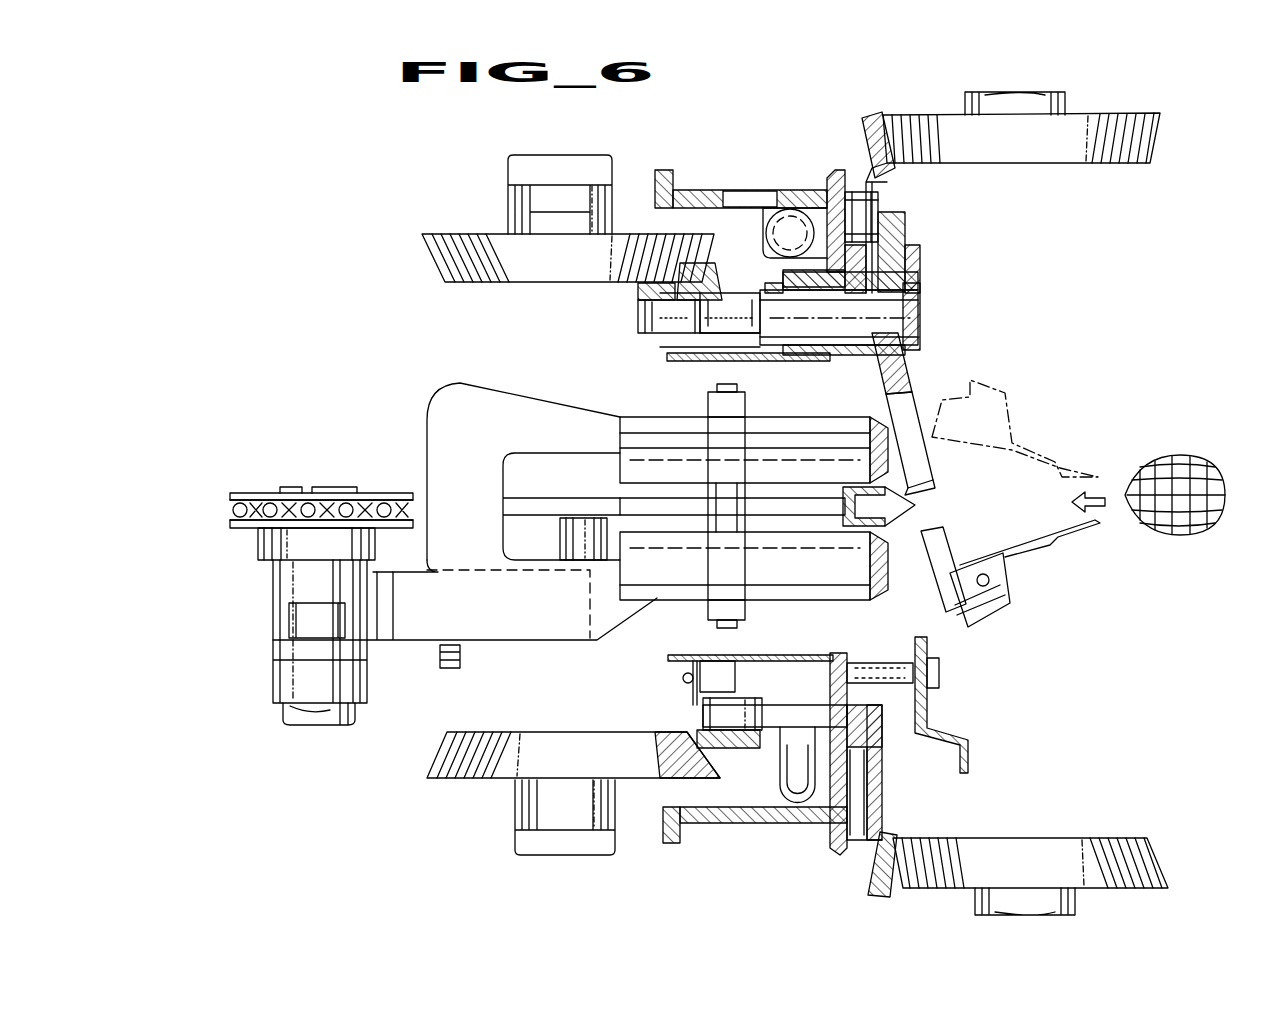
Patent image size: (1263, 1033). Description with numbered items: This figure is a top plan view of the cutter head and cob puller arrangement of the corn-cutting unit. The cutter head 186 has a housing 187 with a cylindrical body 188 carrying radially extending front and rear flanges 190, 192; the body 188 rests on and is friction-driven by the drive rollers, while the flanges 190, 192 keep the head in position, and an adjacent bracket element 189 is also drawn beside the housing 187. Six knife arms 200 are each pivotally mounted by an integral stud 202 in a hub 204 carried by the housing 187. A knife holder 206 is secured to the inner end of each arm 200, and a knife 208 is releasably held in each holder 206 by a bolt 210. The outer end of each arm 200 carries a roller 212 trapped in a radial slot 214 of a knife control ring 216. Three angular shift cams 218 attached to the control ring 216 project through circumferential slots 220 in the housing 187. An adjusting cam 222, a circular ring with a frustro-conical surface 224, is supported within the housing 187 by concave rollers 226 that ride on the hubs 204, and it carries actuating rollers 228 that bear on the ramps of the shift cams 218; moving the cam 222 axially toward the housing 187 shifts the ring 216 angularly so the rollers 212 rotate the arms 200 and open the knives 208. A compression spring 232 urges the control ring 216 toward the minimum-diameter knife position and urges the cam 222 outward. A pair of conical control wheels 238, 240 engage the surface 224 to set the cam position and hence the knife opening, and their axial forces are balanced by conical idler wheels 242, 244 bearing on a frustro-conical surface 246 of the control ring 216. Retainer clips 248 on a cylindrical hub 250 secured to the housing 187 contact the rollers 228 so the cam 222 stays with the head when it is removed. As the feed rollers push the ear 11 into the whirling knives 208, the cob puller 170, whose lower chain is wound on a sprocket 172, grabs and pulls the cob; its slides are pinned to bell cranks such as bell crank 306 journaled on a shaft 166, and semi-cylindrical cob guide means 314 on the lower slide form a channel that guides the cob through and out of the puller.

The ear 11 is at (1215, 458).
The shaft 166 is at (285, 723).
The cob puller 170 is at (365, 403).
The sprocket 172 is at (230, 510).
The cutter head 186 is at (769, 172).
The housing 187 is at (862, 773).
The cylindrical body 188 is at (704, 190).
The bracket 189 is at (930, 696).
The front flange 190 is at (664, 176).
The rear flange 192 is at (834, 170).
The knife arm 200 is at (905, 358).
The integral stud 202 is at (918, 306).
The hub 204 is at (640, 346).
The knife holder 206 is at (1005, 612).
The knife 208 is at (1055, 541).
The bolt 210 is at (989, 580).
The roller 212 is at (893, 214).
The radial slot 214 is at (880, 190).
The knife control ring 216 is at (870, 268).
The angular shift cam 218 is at (790, 705).
The circumferential slot 220 is at (850, 668).
The adjusting cam 222 is at (638, 292).
The frustro-conical surface 224 is at (706, 752).
The concave roller 226 is at (638, 318).
The actuating roller 228 is at (703, 712).
The compression spring 232 is at (775, 788).
The conical control wheel 238 is at (430, 266).
The conical control wheel 240 is at (438, 750).
The conical idler wheel 242 is at (1155, 133).
The conical idler wheel 244 is at (1135, 836).
The frustro-conical surface 246 is at (882, 125).
The retainer clip 248 is at (673, 665).
The cylindrical hub 250 is at (830, 363).
The bell crank 306 is at (273, 683).
The cob guide means 314 is at (893, 488).